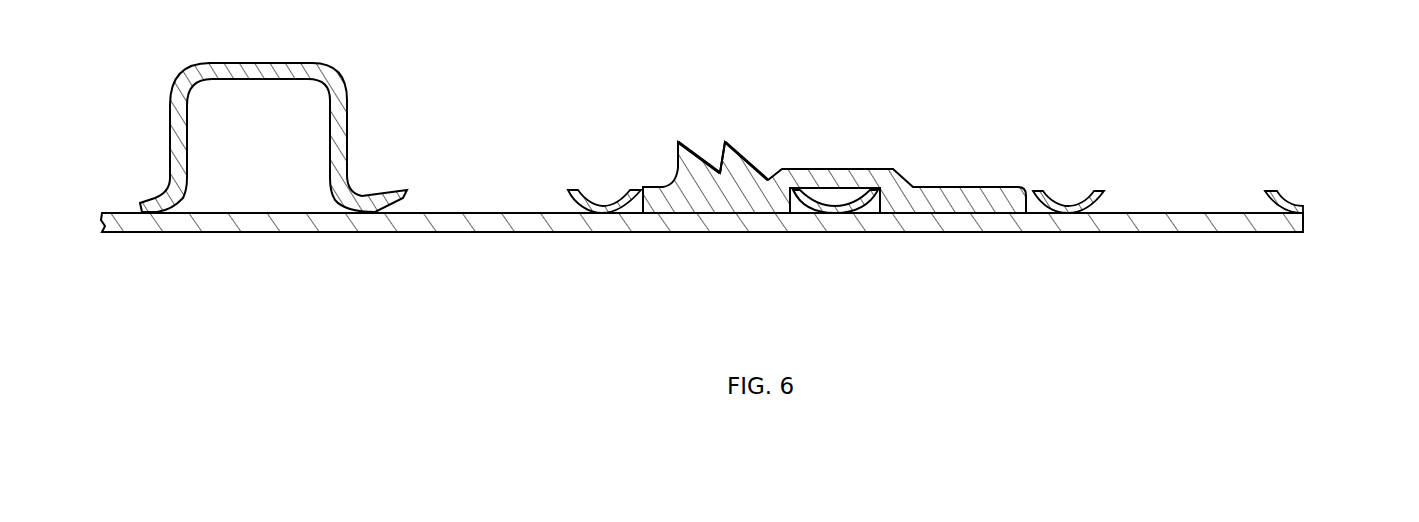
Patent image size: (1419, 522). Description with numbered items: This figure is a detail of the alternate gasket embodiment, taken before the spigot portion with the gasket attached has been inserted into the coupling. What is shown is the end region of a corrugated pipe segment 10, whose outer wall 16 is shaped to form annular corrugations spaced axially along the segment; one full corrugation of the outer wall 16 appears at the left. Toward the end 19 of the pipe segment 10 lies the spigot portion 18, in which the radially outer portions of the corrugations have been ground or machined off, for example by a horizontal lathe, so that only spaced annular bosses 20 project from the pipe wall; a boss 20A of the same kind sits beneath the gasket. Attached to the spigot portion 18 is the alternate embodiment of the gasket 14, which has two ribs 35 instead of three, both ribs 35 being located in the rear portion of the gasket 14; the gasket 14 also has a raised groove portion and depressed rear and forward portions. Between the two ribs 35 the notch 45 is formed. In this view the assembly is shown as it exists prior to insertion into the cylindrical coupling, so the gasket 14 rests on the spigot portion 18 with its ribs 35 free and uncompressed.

The corrugated pipe segment 10 is at (172, 256).
The annular gasket 14 is at (840, 163).
The outer wall 16 is at (324, 82).
The spigot portion 18 is at (1302, 258).
The end 19 is at (1310, 218).
The annular boss 20 is at (582, 191).
The retention clip 20A is at (856, 189).
The rib 35 is at (685, 157).
The notch 45 is at (720, 133).